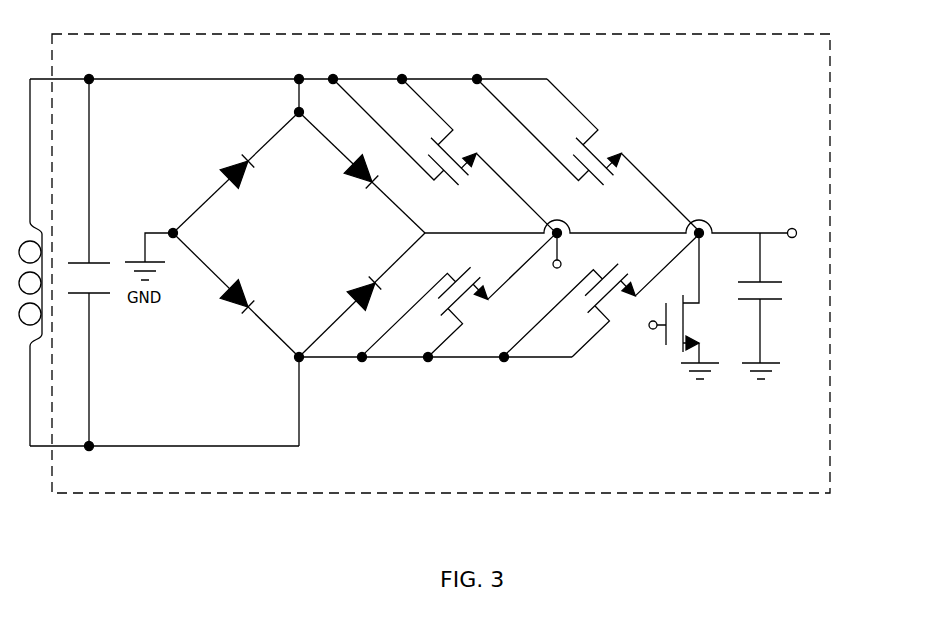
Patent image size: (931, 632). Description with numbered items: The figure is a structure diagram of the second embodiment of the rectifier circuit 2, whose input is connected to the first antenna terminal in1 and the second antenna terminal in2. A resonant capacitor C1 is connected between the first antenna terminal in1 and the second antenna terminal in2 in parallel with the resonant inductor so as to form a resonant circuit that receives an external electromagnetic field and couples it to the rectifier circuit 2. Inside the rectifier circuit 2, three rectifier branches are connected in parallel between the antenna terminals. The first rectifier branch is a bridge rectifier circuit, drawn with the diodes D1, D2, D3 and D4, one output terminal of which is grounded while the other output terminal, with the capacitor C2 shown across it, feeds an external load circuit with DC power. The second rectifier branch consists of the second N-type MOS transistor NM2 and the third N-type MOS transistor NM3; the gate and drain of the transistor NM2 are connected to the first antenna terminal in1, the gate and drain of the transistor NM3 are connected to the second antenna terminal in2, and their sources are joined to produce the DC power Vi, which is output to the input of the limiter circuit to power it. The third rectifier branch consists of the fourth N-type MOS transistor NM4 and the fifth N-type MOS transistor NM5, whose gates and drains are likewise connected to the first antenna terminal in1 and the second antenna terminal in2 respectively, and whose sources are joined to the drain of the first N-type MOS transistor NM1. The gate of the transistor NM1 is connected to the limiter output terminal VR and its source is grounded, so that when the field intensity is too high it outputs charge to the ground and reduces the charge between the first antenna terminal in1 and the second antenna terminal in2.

The rectifier circuit 2 is at (812, 148).
The resonant capacitor C1 is at (89, 263).
The output capacitor C2 is at (773, 317).
The bridge rectifier diode D1 is at (236, 172).
The bridge rectifier diode D2 is at (236, 295).
The bridge rectifier diode D3 is at (362, 295).
The bridge rectifier diode D4 is at (362, 172).
The first N-type MOS transistor NM1 is at (697, 317).
The second N-type MOS transistor NM2 is at (443, 155).
The third N-type MOS transistor NM3 is at (457, 294).
The fourth N-type MOS transistor NM4 is at (586, 155).
The fifth N-type MOS transistor NM5 is at (600, 295).
The first antenna terminal in1 is at (84, 62).
The second antenna terminal in2 is at (86, 467).
The DC power Vi is at (548, 264).
The output terminal of the limiter circuit VR is at (650, 339).